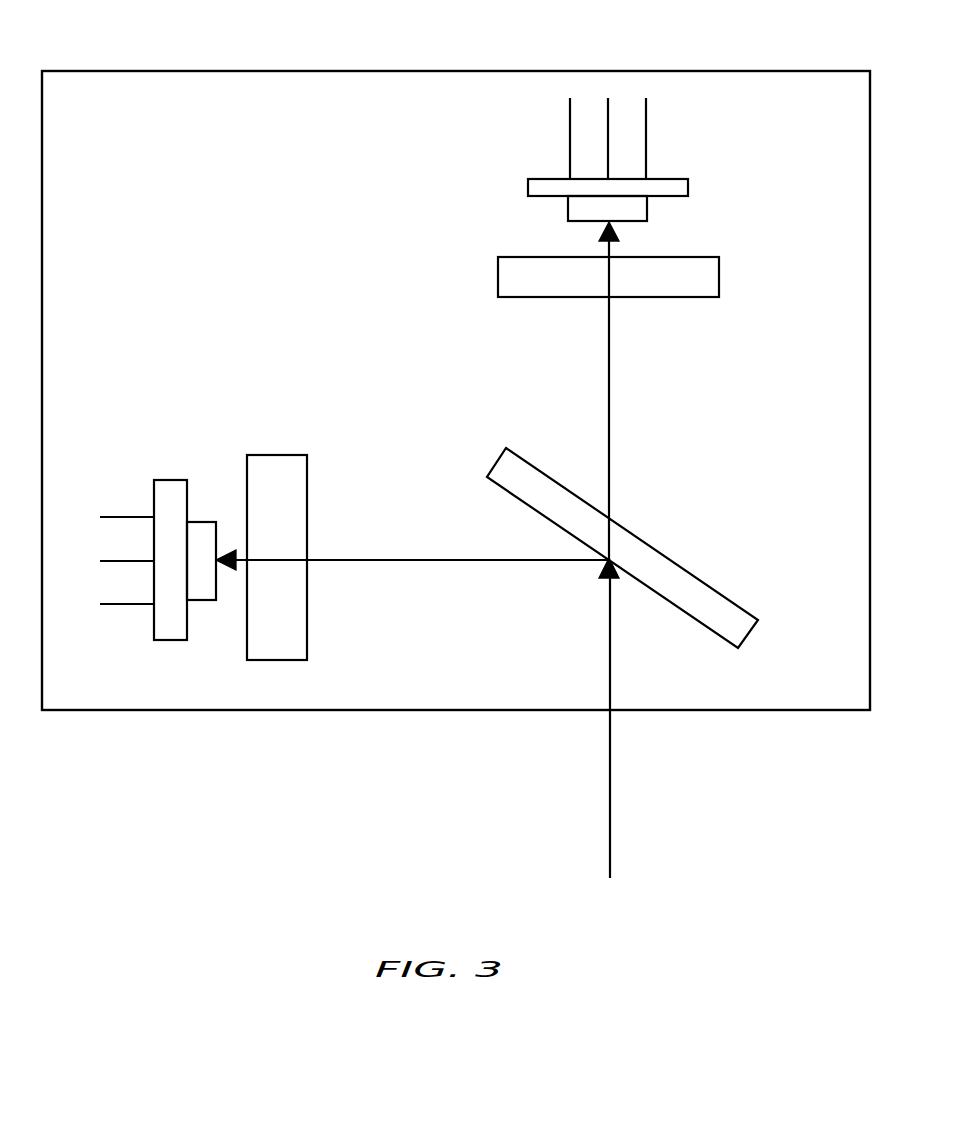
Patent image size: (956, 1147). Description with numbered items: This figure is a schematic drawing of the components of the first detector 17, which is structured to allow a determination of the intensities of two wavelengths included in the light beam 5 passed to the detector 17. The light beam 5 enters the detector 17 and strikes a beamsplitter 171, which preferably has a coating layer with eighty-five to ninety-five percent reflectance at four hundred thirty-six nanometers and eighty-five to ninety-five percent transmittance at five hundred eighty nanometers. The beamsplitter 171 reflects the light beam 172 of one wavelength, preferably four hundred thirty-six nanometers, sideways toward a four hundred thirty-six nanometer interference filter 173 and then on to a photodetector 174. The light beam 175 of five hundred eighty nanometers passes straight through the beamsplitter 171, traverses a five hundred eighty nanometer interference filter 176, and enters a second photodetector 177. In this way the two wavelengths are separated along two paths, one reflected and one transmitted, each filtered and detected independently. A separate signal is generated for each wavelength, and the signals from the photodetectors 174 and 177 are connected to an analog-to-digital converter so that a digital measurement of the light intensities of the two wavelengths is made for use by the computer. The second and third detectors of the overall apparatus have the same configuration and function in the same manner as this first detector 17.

The first detector 17 is at (815, 71).
The photodetector 177 is at (528, 183).
The 580 nm interference filter 176 is at (498, 277).
The 580 nm light beam 175 is at (609, 373).
The beamsplitter 171 is at (710, 585).
The light beam 172 is at (433, 562).
The 436 nm interference filter 173 is at (290, 457).
The photodetector 174 is at (170, 480).
The light beam 5 is at (610, 793).